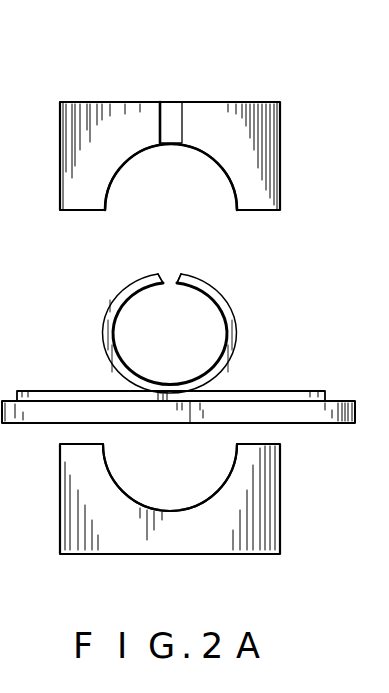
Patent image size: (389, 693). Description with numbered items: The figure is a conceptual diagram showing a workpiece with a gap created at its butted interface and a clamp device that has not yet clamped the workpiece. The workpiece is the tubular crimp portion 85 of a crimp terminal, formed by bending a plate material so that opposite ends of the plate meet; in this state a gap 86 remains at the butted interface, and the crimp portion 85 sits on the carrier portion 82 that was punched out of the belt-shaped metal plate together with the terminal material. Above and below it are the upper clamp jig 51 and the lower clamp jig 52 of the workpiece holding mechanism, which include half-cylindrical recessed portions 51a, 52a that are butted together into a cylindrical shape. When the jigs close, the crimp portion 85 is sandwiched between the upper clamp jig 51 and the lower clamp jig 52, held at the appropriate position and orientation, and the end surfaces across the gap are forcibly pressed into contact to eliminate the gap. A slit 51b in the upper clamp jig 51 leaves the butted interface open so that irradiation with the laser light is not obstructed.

The upper clamp jig 51 is at (235, 102).
The half-cylindrical recessed portion 51a is at (222, 169).
The slit 51b is at (173, 110).
The lower clamp jig 52 is at (282, 473).
The half-cylindrical recessed portion 52a is at (204, 496).
The carrier portion 82 is at (85, 390).
The crimp portion 85 is at (217, 292).
The gap of ring 86 is at (170, 273).